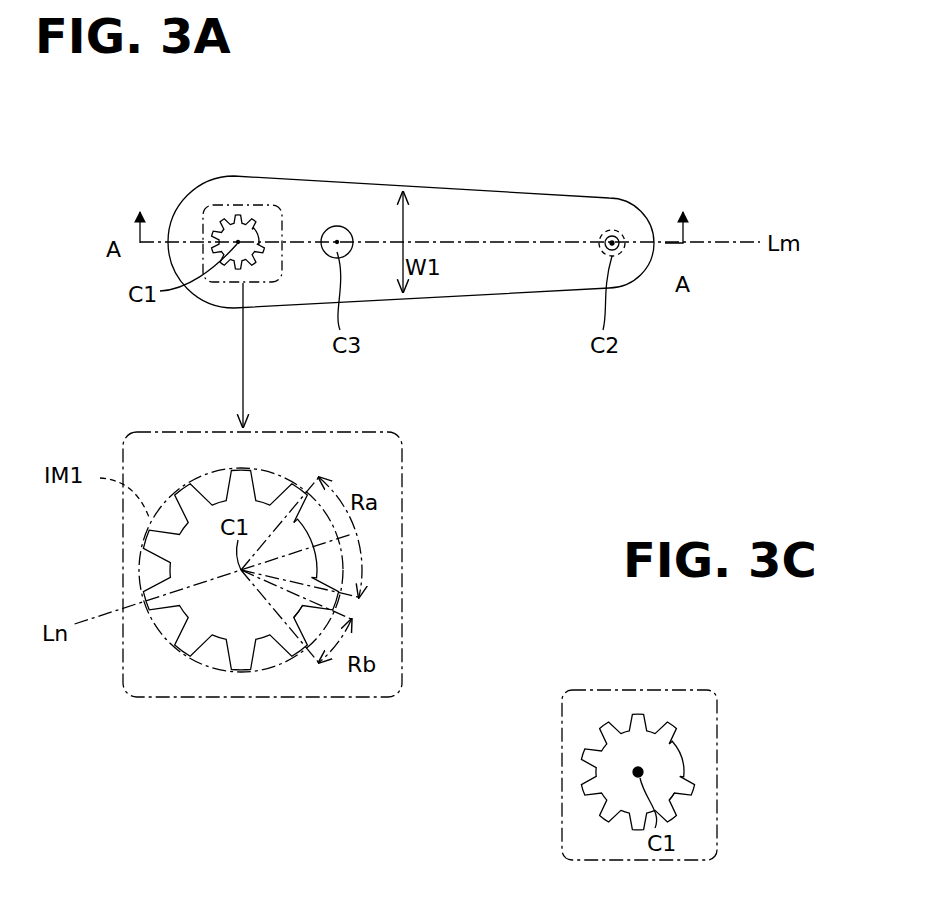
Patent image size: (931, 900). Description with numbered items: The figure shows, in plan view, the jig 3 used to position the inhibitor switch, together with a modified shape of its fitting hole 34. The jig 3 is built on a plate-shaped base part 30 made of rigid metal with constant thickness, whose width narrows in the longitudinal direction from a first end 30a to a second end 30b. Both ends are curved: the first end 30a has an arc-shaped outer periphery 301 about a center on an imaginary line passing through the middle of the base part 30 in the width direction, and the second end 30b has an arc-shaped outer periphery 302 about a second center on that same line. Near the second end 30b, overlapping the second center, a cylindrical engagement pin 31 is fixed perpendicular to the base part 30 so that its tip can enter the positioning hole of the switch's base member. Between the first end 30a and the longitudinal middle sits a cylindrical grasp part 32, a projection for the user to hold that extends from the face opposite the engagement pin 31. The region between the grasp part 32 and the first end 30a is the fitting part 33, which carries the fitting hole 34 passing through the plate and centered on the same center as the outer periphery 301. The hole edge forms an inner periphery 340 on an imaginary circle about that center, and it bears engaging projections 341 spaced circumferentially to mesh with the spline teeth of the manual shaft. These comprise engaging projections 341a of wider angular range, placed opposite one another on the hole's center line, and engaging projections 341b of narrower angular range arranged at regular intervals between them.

In FIG. 3A, the jig 3 is at (371, 418).
In FIG. 3A, the base part 30 is at (447, 207).
In FIG. 3A, the first end 30a is at (188, 228).
In FIG. 3A, the second end 30b is at (648, 242).
In FIG. 3A, the outer periphery 301 is at (178, 207).
In FIG. 3A, the outer periphery 302 is at (647, 209).
In FIG. 3A, the engagement pin 31 is at (598, 240).
In FIG. 3A, the grasp part 32 is at (337, 242).
In FIG. 3A, the fitting part 33 is at (243, 190).
In FIG. 3C, the fitting part 33 is at (662, 702).
In FIG. 3A, the fitting hole 34 is at (299, 490).
In FIG. 3C, the fitting hole 34 is at (674, 773).
In FIG. 3A, the inner periphery 340 is at (185, 487).
In FIG. 3C, the inner periphery 340 is at (637, 772).
In FIG. 3A, the engaging projections 341 is at (299, 649).
In FIG. 3C, the engaging projections 341 is at (674, 787).
In FIG. 3A, the engaging projections (engaging parts) 341a is at (327, 573).
In FIG. 3C, the engaging projections (engaging parts) 341a is at (687, 762).
In FIG. 3A, the engaging projections (internal teeth) 341b is at (338, 612).
In FIG. 3C, the engaging projections (internal teeth) 341b is at (682, 805).